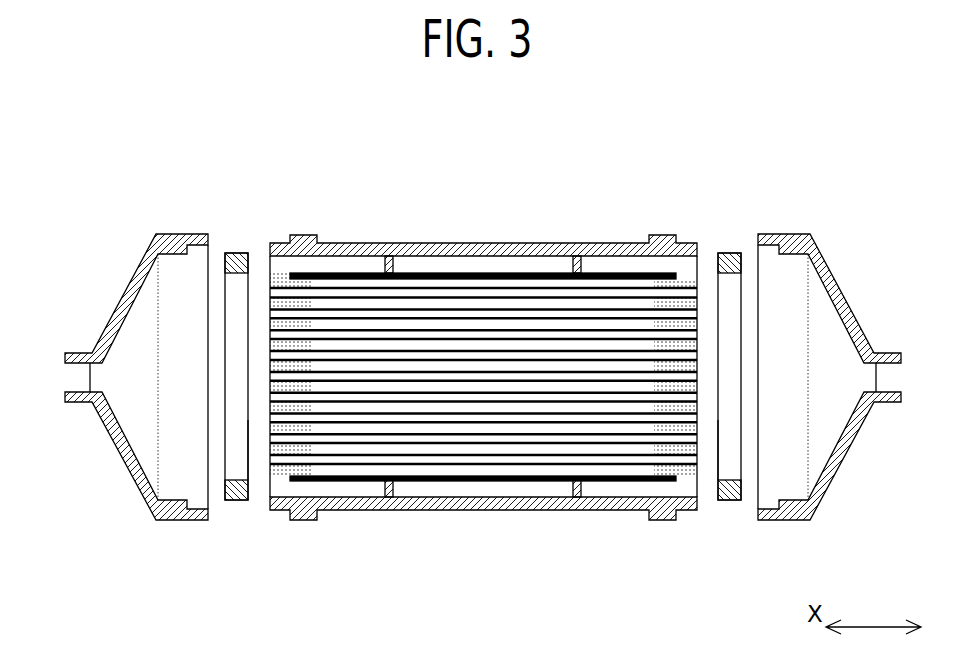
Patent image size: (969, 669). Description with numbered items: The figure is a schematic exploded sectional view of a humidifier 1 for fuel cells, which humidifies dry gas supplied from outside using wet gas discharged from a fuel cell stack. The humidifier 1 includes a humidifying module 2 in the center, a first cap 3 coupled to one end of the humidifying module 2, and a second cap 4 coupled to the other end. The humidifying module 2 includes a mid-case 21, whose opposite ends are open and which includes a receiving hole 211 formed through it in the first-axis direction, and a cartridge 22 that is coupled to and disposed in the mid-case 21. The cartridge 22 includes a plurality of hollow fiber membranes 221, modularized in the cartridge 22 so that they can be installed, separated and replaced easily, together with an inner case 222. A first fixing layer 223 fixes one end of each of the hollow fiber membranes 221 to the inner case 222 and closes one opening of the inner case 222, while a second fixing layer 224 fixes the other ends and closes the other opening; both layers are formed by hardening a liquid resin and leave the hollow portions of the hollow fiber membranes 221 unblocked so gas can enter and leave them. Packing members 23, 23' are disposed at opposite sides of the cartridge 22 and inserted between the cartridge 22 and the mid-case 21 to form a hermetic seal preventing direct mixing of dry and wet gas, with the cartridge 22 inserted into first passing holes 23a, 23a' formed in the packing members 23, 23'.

The humidifier 1 is at (70, 198).
The humidifying module 2 is at (707, 168).
The first cap 3 is at (118, 451).
The second cap 4 is at (847, 451).
The mid-case 21 is at (513, 251).
The receiving hole 211 is at (625, 487).
The cartridge 22 is at (433, 262).
The hollow fiber membranes 221 is at (543, 468).
The inner case 222 is at (468, 480).
The first fixing layer 223 is at (283, 482).
The second fixing layer 224 is at (684, 480).
The packing member 23 is at (227, 387).
The packing member 23' is at (740, 387).
The first passing hole 23a is at (215, 511).
The first passing hole 23a' is at (752, 511).